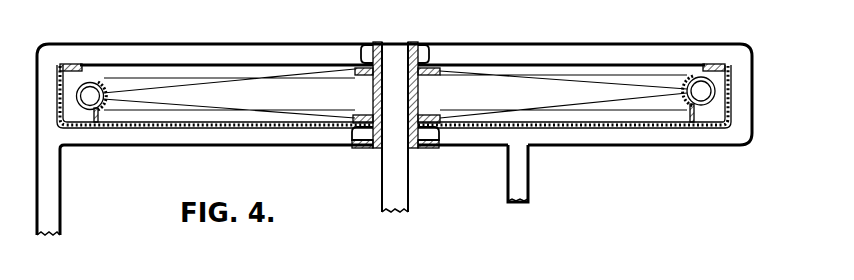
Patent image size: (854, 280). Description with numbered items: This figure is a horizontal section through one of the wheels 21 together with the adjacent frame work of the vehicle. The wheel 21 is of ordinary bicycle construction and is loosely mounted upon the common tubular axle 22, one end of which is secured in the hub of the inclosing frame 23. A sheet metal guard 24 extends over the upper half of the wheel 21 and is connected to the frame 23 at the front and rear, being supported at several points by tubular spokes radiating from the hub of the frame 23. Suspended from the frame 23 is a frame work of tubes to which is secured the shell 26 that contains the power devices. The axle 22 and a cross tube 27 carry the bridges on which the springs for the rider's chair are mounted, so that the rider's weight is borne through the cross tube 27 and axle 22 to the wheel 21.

The wheel 21 is at (706, 95).
The tubular axle 22 is at (408, 190).
The inclosing frame 23 is at (545, 48).
The sheet metal guard 24 is at (72, 63).
The shell 26 is at (616, 128).
The cross tube 27 is at (528, 182).